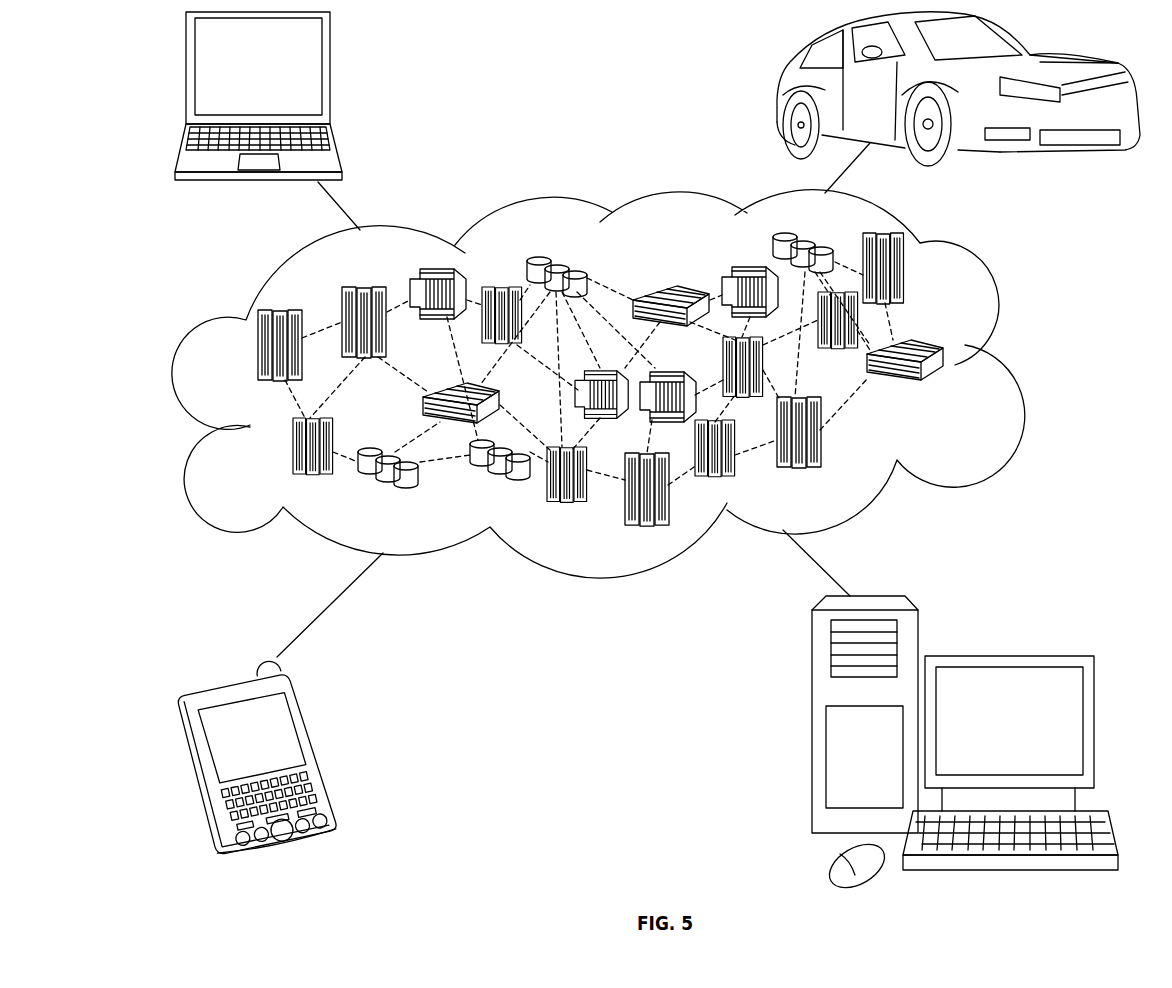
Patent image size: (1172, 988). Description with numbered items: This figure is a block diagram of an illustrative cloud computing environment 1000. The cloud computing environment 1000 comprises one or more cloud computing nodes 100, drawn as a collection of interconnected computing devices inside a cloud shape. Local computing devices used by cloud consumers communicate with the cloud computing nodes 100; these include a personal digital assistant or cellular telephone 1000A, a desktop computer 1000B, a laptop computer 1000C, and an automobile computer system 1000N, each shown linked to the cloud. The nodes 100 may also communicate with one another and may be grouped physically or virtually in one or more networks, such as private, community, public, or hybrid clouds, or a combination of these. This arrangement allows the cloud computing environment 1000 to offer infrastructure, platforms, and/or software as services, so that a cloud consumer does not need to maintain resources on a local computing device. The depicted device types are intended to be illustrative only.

The cloud computing environment 1000 is at (1002, 358).
The cloud computing nodes 100 is at (946, 387).
The personal digital assistant (PDA) or cellular telephone 1000A is at (316, 750).
The desktop computer 1000B is at (1005, 655).
The laptop computer 1000C is at (330, 77).
The automobile computer system 1000N is at (778, 95).